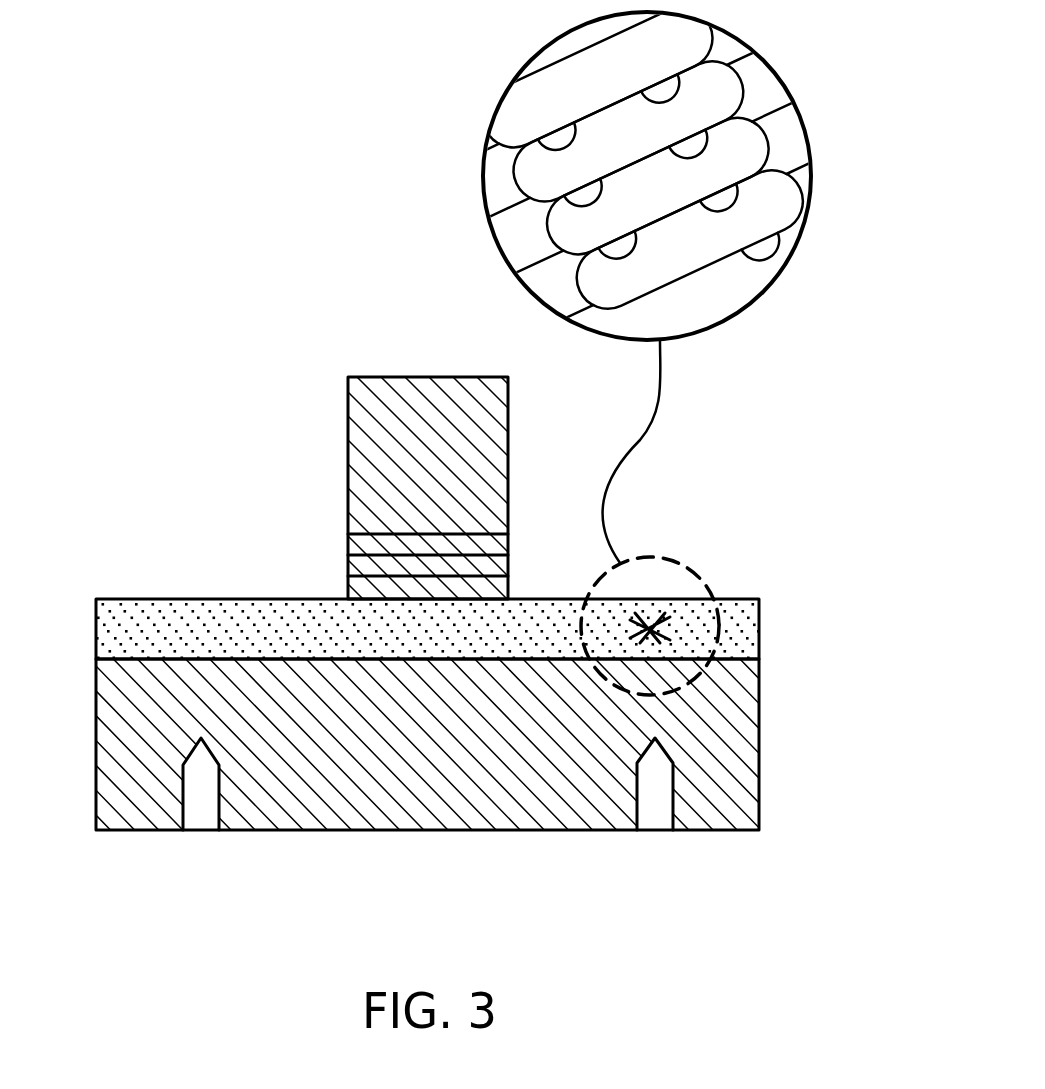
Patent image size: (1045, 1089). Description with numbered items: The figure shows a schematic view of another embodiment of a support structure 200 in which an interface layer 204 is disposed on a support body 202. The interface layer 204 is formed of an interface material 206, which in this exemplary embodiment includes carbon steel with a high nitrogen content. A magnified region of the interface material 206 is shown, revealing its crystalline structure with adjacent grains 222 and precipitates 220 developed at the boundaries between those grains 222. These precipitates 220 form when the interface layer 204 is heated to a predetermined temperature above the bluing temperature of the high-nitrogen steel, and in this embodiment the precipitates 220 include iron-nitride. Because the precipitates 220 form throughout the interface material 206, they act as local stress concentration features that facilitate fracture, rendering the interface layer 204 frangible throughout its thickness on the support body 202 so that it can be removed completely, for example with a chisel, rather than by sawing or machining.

The semiconductor device 200 is at (453, 502).
The support body 202 is at (417, 800).
The interface layer 204 is at (223, 617).
The interface material 206 is at (635, 347).
The precipitates 220 is at (827, 132).
The grains 222 is at (435, 193).